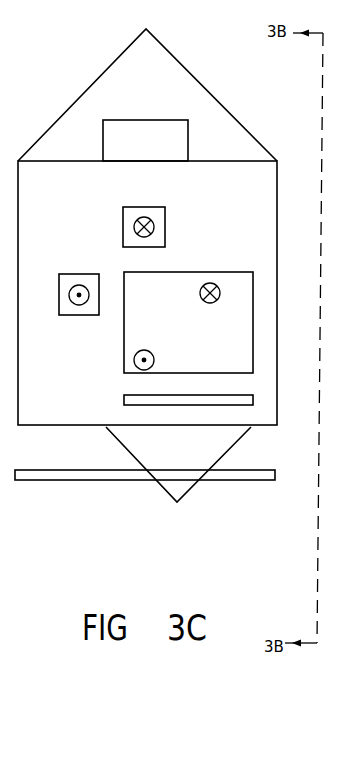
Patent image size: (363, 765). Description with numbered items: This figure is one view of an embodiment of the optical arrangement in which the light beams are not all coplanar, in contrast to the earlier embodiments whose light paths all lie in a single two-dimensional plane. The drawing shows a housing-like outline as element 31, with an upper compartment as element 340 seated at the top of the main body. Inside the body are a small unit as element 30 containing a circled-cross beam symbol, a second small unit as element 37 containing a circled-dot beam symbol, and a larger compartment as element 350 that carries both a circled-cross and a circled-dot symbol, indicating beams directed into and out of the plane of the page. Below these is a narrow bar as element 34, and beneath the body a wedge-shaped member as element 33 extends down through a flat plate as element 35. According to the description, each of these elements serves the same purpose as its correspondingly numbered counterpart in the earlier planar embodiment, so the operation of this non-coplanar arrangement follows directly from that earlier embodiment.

The housing 31 is at (167, 59).
The top compartment 340 is at (182, 143).
The connector 30 is at (160, 208).
The connector 37 is at (100, 271).
The compartment 350 is at (186, 274).
The bar 34 is at (123, 396).
The wedge member 33 is at (220, 443).
The plate 35 is at (260, 475).